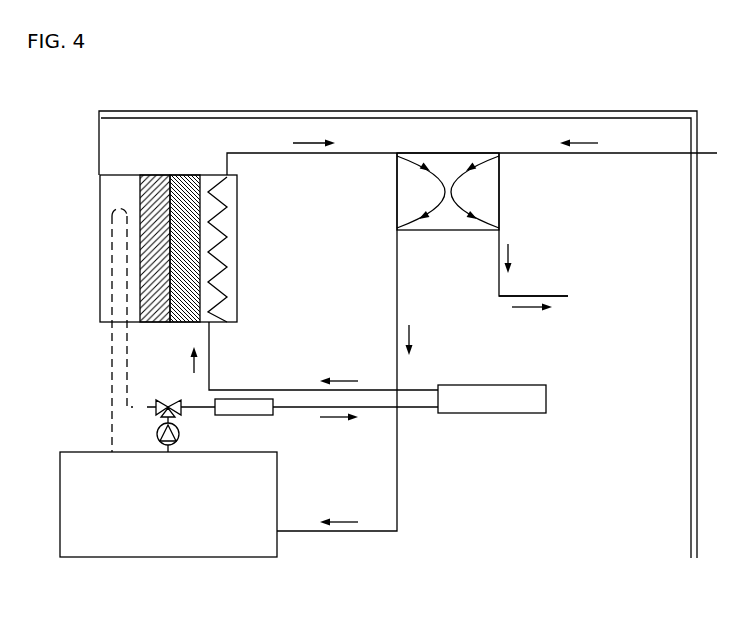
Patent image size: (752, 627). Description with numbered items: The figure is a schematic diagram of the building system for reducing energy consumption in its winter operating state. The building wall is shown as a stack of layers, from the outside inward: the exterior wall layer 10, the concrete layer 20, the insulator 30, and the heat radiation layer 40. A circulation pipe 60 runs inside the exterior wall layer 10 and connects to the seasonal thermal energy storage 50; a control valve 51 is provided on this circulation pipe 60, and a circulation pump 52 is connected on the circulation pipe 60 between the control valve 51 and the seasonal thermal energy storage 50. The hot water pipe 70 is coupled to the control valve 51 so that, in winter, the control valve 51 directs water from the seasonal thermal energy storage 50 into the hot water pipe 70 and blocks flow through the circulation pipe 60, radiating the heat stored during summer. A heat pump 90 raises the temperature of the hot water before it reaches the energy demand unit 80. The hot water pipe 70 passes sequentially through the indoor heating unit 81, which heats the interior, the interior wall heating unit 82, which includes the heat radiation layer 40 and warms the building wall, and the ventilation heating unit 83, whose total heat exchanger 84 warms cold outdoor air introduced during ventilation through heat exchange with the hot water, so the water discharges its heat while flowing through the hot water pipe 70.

The exterior wall layer 10 is at (111, 174).
The concrete layer 20 is at (153, 174).
The insulator 30 is at (187, 174).
The heat radiation layer 40 is at (213, 174).
The seasonal thermal energy storage 50 is at (168, 558).
The control valve 51 is at (168, 400).
The circulation pump 52 is at (180, 434).
The circulation pipe 60 is at (112, 345).
The hot water pipe 70 is at (289, 390).
The energy demand unit 80 is at (626, 318).
The indoor heating unit 81 is at (556, 394).
The interior wall heating unit 82 is at (247, 276).
The ventilation heating unit 83 is at (562, 304).
The total heat exchanger 84 is at (500, 187).
The heat pump 90 is at (240, 399).